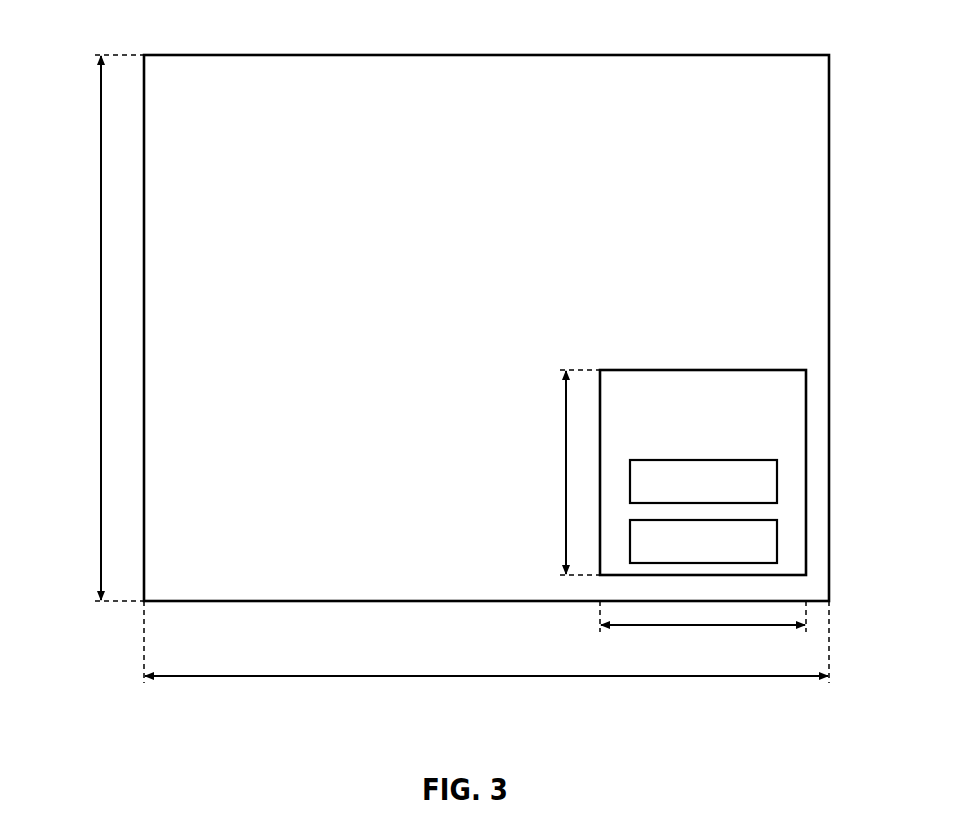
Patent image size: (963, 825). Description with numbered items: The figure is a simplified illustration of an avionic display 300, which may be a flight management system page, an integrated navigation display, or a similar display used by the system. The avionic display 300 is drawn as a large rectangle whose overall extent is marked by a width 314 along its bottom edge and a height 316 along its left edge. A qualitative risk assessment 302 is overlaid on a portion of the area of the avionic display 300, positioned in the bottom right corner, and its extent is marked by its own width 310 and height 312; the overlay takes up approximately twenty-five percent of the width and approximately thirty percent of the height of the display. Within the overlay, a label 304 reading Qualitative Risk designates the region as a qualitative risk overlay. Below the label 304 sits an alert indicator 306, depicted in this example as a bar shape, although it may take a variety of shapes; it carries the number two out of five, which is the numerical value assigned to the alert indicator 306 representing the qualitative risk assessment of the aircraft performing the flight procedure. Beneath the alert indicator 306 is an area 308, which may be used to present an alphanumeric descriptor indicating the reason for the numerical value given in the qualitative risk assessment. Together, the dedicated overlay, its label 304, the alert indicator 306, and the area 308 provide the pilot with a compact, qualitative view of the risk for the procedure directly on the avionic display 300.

The avionic display 300 is at (218, 55).
The qualitative risk assessment 302 is at (676, 370).
The label 304 is at (710, 390).
The alert indicator 306 is at (766, 484).
The area 308 is at (766, 541).
The width 310 is at (712, 625).
The height 312 is at (566, 473).
The width 314 is at (525, 676).
The height 316 is at (101, 327).